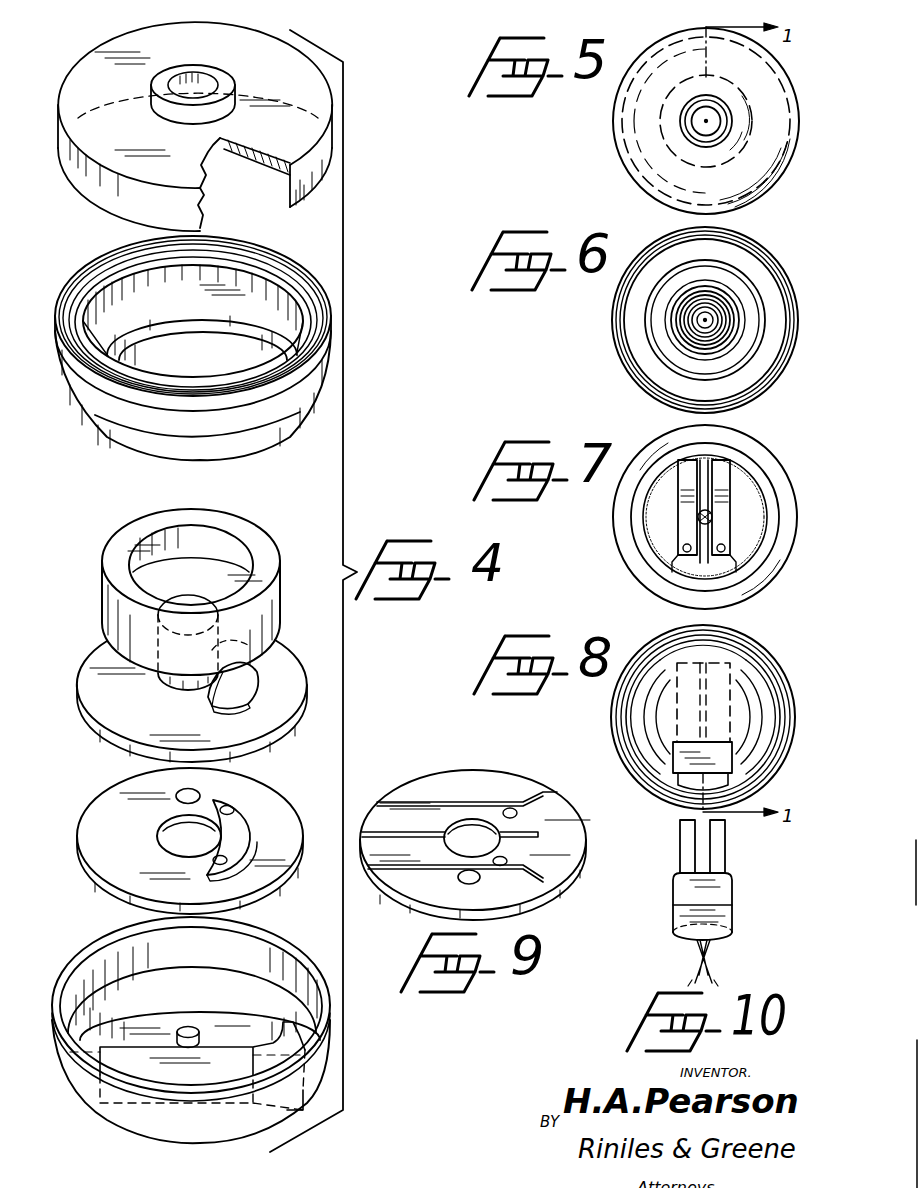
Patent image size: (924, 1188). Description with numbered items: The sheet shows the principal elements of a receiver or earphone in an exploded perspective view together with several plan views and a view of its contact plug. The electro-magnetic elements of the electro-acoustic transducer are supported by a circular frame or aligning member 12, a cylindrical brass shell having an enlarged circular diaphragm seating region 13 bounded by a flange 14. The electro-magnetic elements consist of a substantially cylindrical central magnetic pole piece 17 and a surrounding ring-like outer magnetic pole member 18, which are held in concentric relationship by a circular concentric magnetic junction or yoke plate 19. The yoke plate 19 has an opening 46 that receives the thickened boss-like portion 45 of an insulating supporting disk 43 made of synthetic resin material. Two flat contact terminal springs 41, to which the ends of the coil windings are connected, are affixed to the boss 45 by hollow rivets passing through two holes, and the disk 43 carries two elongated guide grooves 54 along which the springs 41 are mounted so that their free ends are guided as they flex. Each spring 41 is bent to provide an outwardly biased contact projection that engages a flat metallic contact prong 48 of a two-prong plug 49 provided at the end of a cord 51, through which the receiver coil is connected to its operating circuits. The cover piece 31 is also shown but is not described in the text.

In FIG. 4, the cover disc 31 is at (73, 83).
In FIG. 4, the circular frame or aligning member 12 is at (190, 354).
In FIG. 4, the diaphragm seating region 13 is at (117, 280).
In FIG. 4, the flange 14 is at (77, 283).
In FIG. 4, the outer magnetic pole member 18 is at (120, 627).
In FIG. 4, the central magnetic pole piece 17 is at (177, 685).
In FIG. 4, the magnetic junction or yoke plate 19 is at (208, 694).
In FIG. 4, the opening 46 is at (256, 666).
In FIG. 4, the supporting disk 43 is at (200, 837).
In FIG. 9, the supporting disk 43 is at (480, 773).
In FIG. 4, the boss-like portion 45 is at (248, 830).
In FIG. 7, the contact terminal springs 41 is at (690, 472).
In FIG. 9, the guide grooves 54 is at (458, 815).
In FIG. 10, the contact prong 48 is at (720, 846).
In FIG. 10, the two-prong plug 49 is at (731, 886).
In FIG. 10, the cord 51 is at (709, 958).